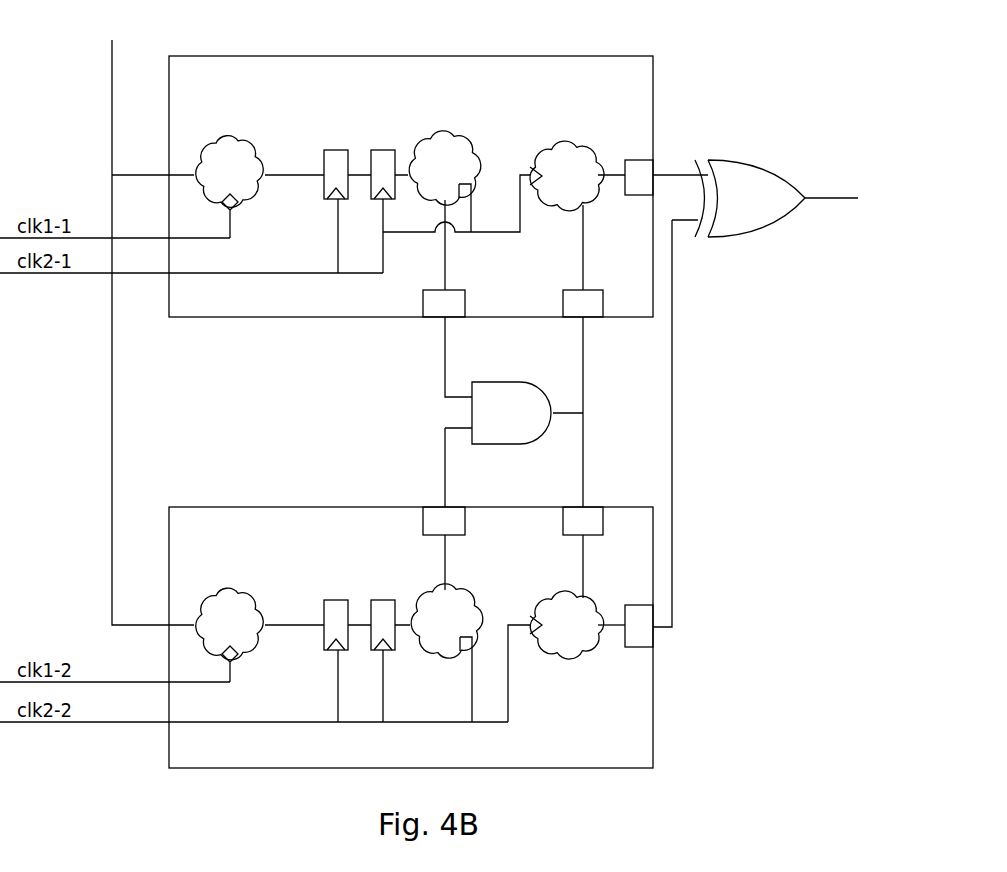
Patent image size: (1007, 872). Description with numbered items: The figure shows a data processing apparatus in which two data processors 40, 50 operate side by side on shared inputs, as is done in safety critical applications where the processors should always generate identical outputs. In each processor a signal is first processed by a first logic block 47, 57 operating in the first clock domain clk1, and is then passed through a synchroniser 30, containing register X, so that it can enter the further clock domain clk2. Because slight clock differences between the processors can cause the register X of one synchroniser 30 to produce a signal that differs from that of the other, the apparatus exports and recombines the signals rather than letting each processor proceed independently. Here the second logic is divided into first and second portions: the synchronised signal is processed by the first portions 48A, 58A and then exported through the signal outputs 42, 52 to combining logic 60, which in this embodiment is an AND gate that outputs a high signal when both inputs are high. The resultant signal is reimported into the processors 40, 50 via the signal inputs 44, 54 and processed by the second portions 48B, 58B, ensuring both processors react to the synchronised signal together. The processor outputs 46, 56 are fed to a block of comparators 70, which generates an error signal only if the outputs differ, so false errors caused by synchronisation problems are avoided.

The data processor 40 is at (607, 57).
The data processor 50 is at (653, 708).
The synchroniser 30 is at (395, 122).
The first logic block 47 is at (265, 190).
The first logic block 57 is at (265, 640).
The first portion of second logic block 48A is at (483, 128).
The second portion of second logic block 48B is at (590, 128).
The first portion of second logic block 58A is at (485, 580).
The second portion of second logic block 58B is at (560, 660).
The output 46 is at (653, 160).
The output 56 is at (650, 637).
The signal output 42 is at (452, 317).
The signal input 44 is at (592, 317).
The signal output 52 is at (452, 507).
The signal input 54 is at (592, 507).
The combining logic 60 is at (472, 417).
The comparators 70 is at (765, 163).